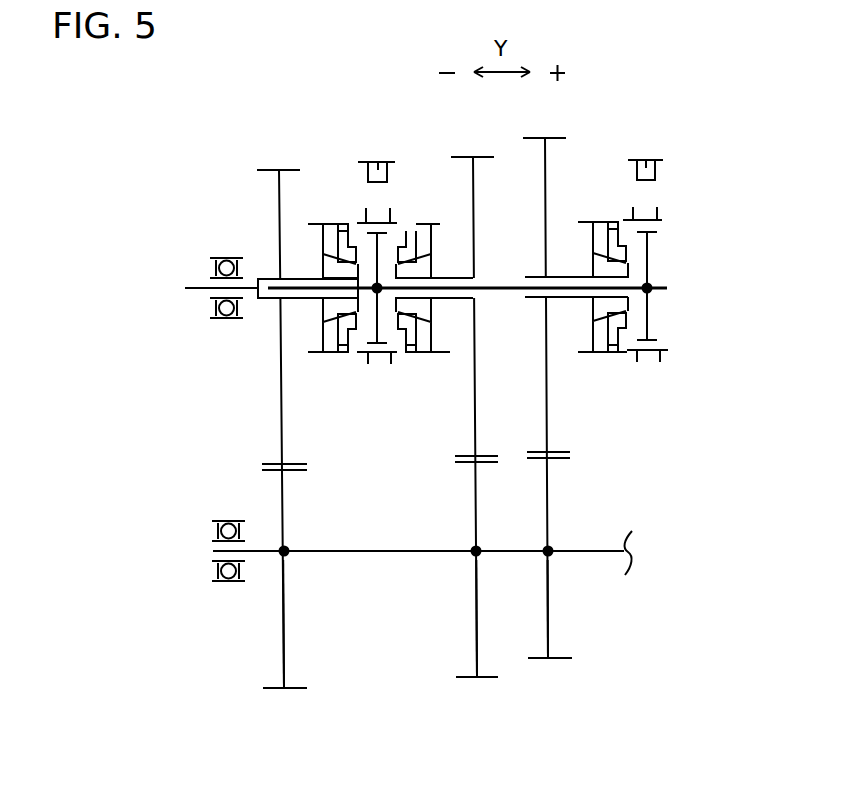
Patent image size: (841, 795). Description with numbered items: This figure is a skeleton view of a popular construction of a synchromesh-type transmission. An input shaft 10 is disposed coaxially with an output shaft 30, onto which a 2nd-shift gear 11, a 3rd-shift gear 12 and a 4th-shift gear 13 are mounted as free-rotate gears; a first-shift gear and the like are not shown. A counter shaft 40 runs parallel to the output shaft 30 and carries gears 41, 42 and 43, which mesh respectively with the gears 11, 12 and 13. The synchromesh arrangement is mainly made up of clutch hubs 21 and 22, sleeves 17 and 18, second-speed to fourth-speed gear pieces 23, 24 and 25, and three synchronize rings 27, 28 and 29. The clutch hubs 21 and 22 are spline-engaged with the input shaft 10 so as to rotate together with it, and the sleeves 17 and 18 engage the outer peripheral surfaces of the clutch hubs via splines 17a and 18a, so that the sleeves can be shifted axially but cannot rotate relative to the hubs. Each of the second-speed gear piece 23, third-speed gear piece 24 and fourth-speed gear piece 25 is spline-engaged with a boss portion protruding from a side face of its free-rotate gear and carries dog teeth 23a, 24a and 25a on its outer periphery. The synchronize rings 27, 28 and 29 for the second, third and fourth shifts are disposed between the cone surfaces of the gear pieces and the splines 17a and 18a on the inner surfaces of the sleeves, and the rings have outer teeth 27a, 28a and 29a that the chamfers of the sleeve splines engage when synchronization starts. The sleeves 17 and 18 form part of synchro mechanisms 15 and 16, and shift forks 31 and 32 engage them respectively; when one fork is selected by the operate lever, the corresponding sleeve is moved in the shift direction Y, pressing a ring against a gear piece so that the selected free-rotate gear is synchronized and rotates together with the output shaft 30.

The input shaft 10 is at (198, 284).
The 2nd-shift gear 11 is at (548, 138).
The 3rd-shift gear 12 is at (473, 157).
The 4th-shift gear 13 is at (275, 170).
The synchro mechanism 15 is at (611, 215).
The synchro mechanism 16 is at (425, 197).
The sleeve 17 is at (660, 210).
The spline 17a is at (662, 222).
The sleeve 18 is at (360, 223).
The spline 18a is at (400, 223).
The clutch hub 21 is at (650, 322).
The clutch hub 22 is at (370, 364).
The second-speed gear piece 23 is at (592, 327).
The dog teeth 23a is at (592, 222).
The third-speed gear piece 24 is at (433, 244).
The dog teeth 24a is at (450, 352).
The fourth-speed gear piece 25 is at (323, 250).
The dog teeth 25a is at (315, 352).
The synchronize ring 27 is at (607, 338).
The outer teeth 27a is at (612, 352).
The synchronize ring 28 is at (412, 348).
The outer teeth 28a is at (411, 354).
The synchronize ring 29 is at (333, 348).
The outer teeth 29a is at (343, 354).
The output shaft 30 is at (668, 287).
The shift fork 31 is at (657, 160).
The shift fork 32 is at (376, 160).
The counter shaft 40 is at (385, 551).
The gear 41 is at (550, 593).
The gear 42 is at (476, 628).
The gear 43 is at (284, 638).